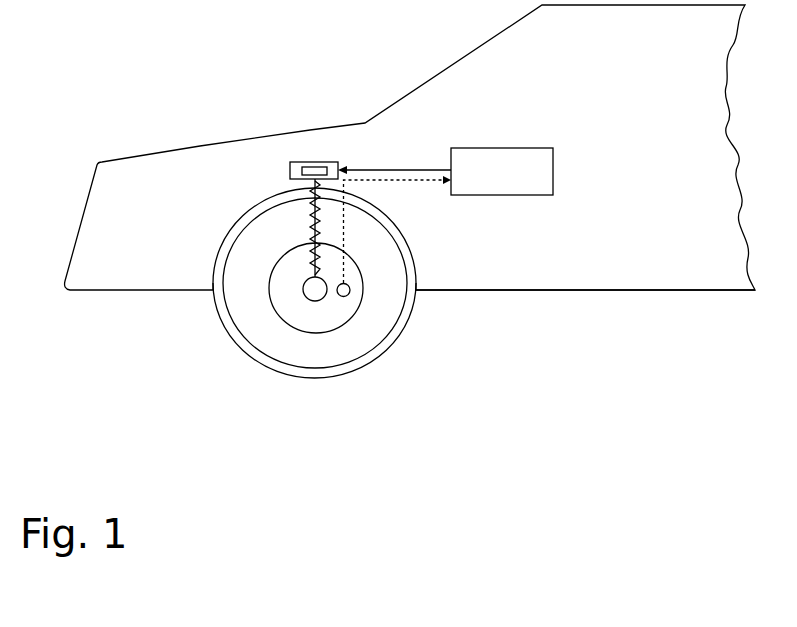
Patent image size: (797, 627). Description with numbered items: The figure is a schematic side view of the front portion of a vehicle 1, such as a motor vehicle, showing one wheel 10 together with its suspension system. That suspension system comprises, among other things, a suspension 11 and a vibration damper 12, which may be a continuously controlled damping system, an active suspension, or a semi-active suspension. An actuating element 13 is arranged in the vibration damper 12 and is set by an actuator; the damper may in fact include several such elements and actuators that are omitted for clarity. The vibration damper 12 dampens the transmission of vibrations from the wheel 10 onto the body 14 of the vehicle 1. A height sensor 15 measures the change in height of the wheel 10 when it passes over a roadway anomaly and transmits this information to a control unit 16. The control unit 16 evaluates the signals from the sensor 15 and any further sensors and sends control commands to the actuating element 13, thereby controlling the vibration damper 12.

The vehicle 1 is at (613, 310).
The wheel 10 is at (357, 370).
The suspension 11 is at (300, 220).
The vibration damper 12 is at (300, 162).
The actuating element 13 is at (320, 166).
The body 14 is at (687, 269).
The height sensor 15 is at (350, 292).
The control unit 16 is at (482, 172).